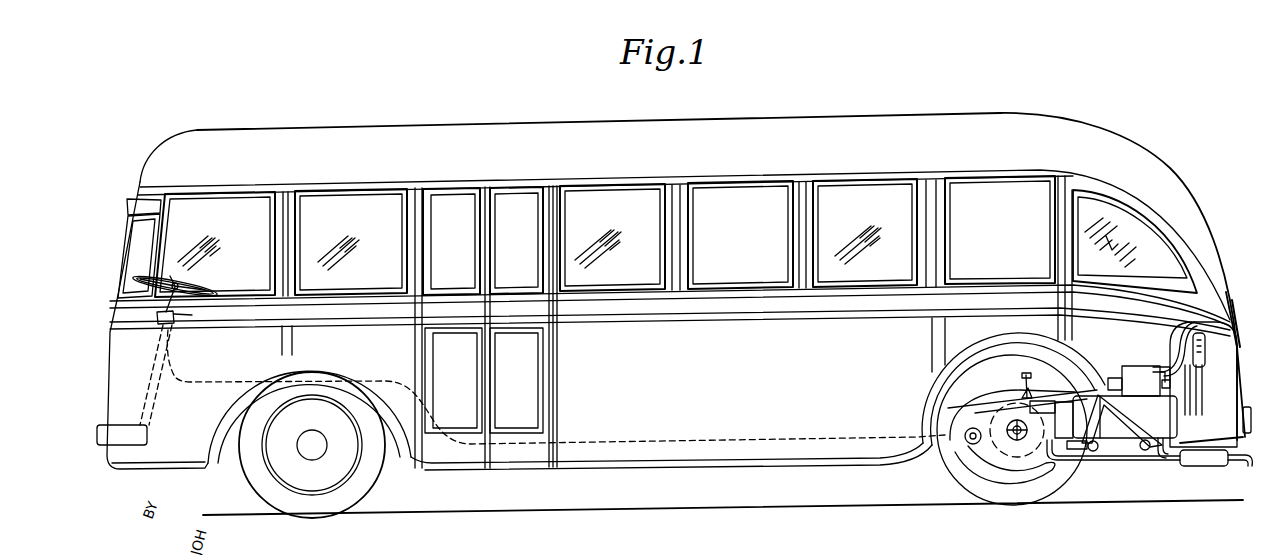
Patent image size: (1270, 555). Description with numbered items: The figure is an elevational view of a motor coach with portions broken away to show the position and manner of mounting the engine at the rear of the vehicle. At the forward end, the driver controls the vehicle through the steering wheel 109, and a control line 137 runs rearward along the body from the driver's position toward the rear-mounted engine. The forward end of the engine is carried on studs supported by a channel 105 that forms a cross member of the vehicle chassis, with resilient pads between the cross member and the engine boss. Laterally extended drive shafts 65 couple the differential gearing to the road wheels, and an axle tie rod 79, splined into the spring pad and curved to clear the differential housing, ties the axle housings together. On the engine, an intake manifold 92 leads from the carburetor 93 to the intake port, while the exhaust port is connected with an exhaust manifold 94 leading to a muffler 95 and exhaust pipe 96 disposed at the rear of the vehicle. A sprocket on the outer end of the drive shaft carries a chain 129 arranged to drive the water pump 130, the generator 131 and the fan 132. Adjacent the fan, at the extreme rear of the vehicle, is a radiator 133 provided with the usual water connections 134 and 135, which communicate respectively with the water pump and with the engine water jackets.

The steering wheel 109 is at (193, 292).
The control line 137 is at (183, 367).
The channel 105 is at (1015, 381).
The axle tie rod 79 is at (968, 444).
The drive shaft 65 is at (1028, 425).
The manifold 92 is at (1102, 428).
The carburetor 93 is at (1135, 376).
The manifold 94 is at (1121, 462).
The water connection 135 is at (1164, 458).
The muffler 95 is at (1200, 466).
The exhaust pipe 96 is at (1240, 464).
The chain 129 is at (1197, 418).
The water pump 130 is at (1172, 367).
The generator 131 is at (1138, 370).
The fan 132 is at (1208, 341).
The radiator 133 is at (1234, 318).
The water connection 134 is at (1172, 294).